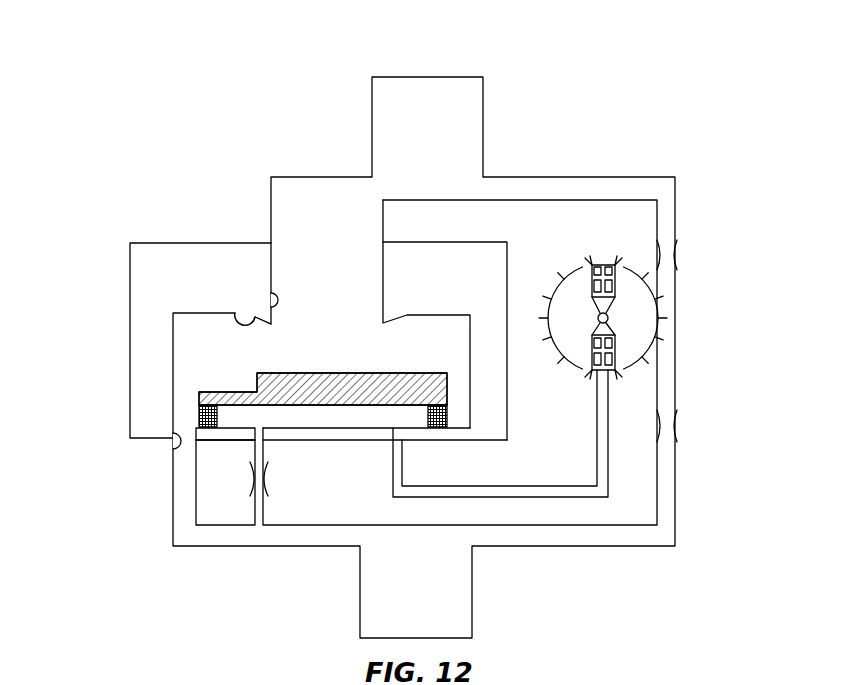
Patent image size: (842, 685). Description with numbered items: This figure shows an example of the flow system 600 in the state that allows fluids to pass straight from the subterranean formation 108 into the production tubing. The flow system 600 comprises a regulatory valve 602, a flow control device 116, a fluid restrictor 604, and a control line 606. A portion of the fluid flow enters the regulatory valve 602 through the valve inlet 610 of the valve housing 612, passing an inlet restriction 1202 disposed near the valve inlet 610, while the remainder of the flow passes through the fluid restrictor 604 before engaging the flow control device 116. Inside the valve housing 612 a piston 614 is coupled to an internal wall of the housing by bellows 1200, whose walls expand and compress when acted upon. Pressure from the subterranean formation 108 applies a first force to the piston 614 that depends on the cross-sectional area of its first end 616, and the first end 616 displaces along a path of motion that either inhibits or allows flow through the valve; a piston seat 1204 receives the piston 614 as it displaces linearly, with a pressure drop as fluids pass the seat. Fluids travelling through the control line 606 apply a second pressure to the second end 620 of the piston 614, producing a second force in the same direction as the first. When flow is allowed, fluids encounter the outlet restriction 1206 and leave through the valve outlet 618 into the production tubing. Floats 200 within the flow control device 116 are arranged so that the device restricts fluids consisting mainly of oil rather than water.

The subterranean formation 108 is at (447, 45).
The flow system 600 is at (634, 53).
The regulatory valve 602 is at (173, 193).
The inlet restriction 1202 is at (330, 252).
The first end 616 is at (348, 372).
The piston 614 is at (310, 372).
The valve inlet 610 is at (269, 300).
The piston seat 1204 is at (235, 313).
The valve housing 612 is at (130, 323).
The bellows 1200 is at (200, 413).
The valve outlet 618 is at (176, 445).
The outlet restriction 1206 is at (181, 452).
The second end 620 is at (333, 403).
The floats 200 is at (592, 283).
The flow control device 116 is at (647, 357).
The fluid restrictor 604 is at (680, 430).
The control line 606 is at (572, 497).